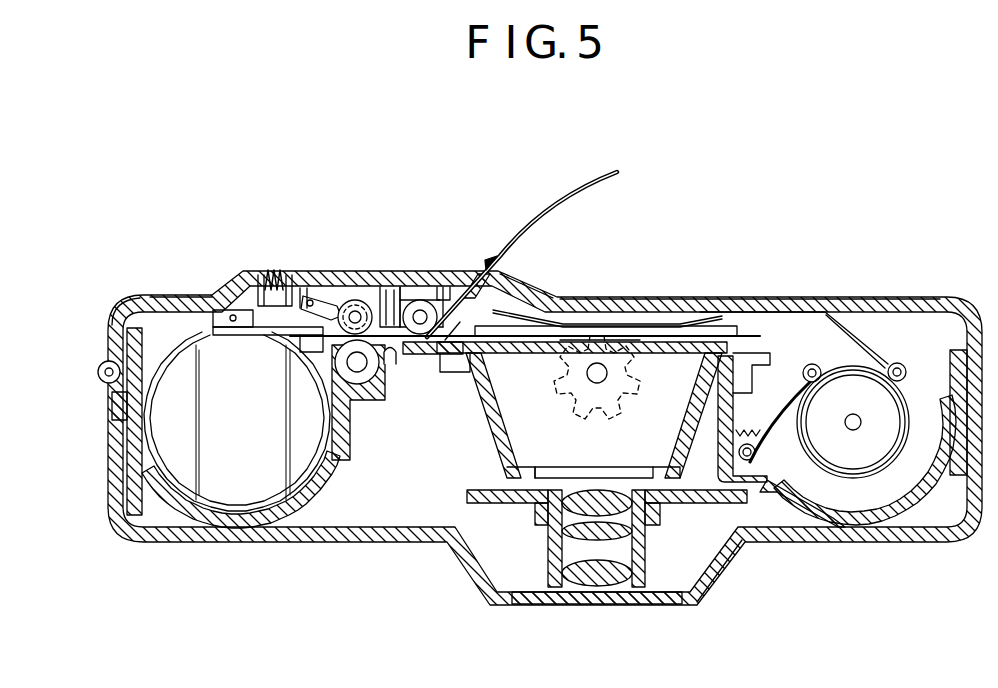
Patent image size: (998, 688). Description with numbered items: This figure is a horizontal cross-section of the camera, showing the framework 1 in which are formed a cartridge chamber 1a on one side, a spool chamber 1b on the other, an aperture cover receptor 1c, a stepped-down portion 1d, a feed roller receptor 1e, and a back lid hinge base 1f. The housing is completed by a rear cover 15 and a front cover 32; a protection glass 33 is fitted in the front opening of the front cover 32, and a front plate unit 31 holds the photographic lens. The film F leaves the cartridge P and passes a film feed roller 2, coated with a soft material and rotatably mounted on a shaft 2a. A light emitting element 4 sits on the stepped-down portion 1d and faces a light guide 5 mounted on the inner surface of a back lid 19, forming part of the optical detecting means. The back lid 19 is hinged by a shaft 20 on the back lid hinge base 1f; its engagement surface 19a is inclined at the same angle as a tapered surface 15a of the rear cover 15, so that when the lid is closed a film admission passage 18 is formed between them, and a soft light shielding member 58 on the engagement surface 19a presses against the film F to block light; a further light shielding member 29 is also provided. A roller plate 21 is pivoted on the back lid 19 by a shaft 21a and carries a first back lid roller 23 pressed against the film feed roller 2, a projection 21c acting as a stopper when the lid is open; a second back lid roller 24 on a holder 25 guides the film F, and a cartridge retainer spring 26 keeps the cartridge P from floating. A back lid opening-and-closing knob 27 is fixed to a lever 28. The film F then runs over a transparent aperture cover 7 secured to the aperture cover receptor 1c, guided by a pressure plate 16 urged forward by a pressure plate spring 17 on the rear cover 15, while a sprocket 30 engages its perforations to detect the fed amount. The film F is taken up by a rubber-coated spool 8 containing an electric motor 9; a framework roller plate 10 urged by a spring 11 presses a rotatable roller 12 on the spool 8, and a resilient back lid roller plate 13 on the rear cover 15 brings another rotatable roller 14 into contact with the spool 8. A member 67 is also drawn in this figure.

The framework 1 is at (281, 514).
The cartridge chamber 1a is at (162, 342).
The spool chamber 1b is at (858, 500).
The aperture cover receptor 1c is at (478, 357).
The stepped-down portion 1d is at (412, 356).
The feed roller receptor 1e is at (336, 386).
The back lid hinge base 1f is at (122, 405).
The film feed roller 2 is at (357, 385).
The shaft 2a is at (332, 357).
The light emitting element 4 is at (390, 366).
The light guide 5 is at (404, 300).
The aperture cover 7 is at (659, 346).
The spool 8 is at (894, 410).
The electric motor 9 is at (882, 434).
The framework roller plate 10 is at (530, 428).
The spring 11 is at (746, 424).
The rotatable roller 12 is at (818, 366).
The back lid roller plate 13 is at (838, 320).
The rotatable roller 14 is at (905, 366).
The rear cover 15 is at (788, 297).
The tapered surface 15a is at (513, 275).
The pressure plate 16 is at (722, 316).
The pressure plate spring 17 is at (653, 326).
The film admission passage 18 is at (499, 258).
The back lid 19 is at (193, 302).
The engagement surface 19a is at (471, 274).
The shaft 20 is at (97, 372).
The roller plate 21 is at (348, 301).
The shaft 21a is at (304, 296).
The projection 21c is at (278, 333).
The first back lid roller 23 is at (380, 297).
The second back lid roller 24 is at (444, 289).
The holder 25 is at (420, 300).
The cartridge retainer spring 26 is at (232, 311).
The back lid opening-and-closing knob 27 is at (272, 270).
The back lid opening-and-closing lever 28 is at (261, 288).
The light shielding member 29 is at (113, 326).
The sprocket 30 is at (597, 410).
The front plate unit 31 is at (652, 512).
The front cover 32 is at (728, 564).
The protection glass 33 is at (562, 602).
The light shielding member 58 is at (491, 262).
The guide member 67 is at (388, 296).
The film F is at (616, 172).
The cartridge P is at (223, 488).